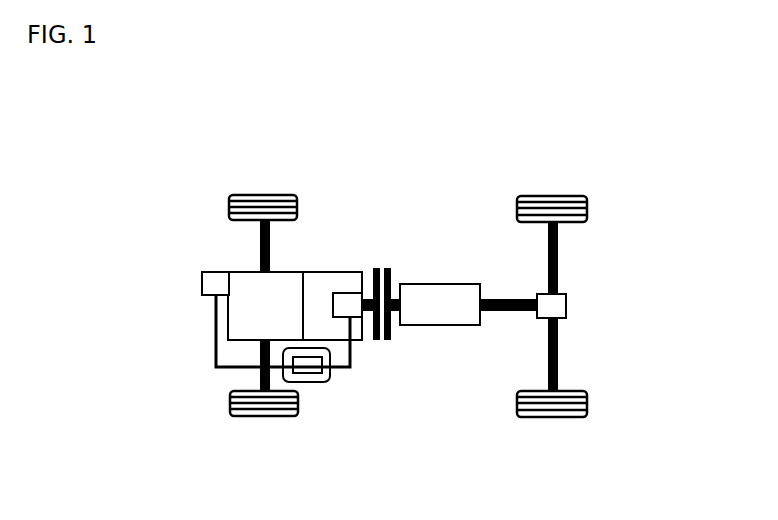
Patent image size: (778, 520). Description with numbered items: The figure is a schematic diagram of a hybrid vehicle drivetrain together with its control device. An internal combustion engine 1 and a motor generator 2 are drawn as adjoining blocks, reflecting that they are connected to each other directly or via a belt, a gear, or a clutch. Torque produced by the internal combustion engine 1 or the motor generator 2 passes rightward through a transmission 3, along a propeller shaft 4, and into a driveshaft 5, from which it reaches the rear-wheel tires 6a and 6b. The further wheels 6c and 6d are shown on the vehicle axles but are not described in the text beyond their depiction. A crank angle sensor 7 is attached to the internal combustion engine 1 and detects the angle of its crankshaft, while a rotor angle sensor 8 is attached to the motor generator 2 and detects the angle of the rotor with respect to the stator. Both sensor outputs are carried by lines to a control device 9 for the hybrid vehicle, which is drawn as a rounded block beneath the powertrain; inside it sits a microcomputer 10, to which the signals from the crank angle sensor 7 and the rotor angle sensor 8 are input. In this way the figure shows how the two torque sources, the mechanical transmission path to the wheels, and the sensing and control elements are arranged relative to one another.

The internal combustion engine 1 is at (243, 283).
The motor generator 2 is at (325, 280).
The transmission 3 is at (440, 295).
The propeller shaft 4 is at (510, 312).
The driveshaft 5 is at (560, 350).
The rear-wheel tire 6a is at (265, 200).
The rear-wheel tire 6b is at (268, 416).
The rear left wheel 6c is at (590, 204).
The rear right wheel 6d is at (590, 404).
The crank angle sensor 7 is at (210, 287).
The rotor angle sensor 8 is at (357, 300).
The control device 9 is at (327, 377).
The microcomputer 10 is at (307, 375).